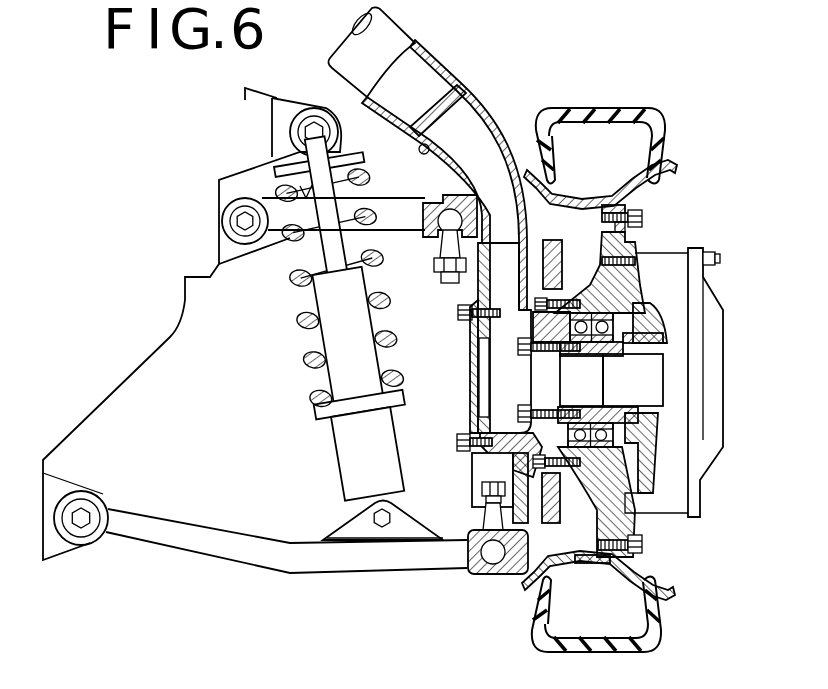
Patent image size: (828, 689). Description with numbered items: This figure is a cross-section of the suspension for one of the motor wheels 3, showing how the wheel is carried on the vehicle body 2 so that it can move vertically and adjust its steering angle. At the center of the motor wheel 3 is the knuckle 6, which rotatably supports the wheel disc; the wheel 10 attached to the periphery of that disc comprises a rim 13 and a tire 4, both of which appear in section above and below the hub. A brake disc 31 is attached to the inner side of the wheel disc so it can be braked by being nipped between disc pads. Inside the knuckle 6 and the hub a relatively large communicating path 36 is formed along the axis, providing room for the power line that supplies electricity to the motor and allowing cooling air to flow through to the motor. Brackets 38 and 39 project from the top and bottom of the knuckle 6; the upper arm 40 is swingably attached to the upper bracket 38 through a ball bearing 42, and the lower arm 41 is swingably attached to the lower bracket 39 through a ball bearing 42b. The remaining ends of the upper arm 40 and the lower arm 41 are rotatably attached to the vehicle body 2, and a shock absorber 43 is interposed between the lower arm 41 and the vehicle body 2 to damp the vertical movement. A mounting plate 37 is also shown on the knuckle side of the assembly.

The vehicle body 2 is at (168, 337).
The motor wheel 3 is at (668, 240).
The tire 4 is at (662, 114).
The knuckle 6 is at (483, 288).
The wheel 10 is at (645, 372).
The rim 13 is at (623, 378).
The brake disc 31 is at (552, 240).
The communicating path 36 is at (524, 397).
The mounting plate 37 is at (470, 380).
The bracket 38 is at (430, 262).
The bracket 39 is at (470, 517).
The upper arm 40 is at (395, 203).
The lower arm 41 is at (370, 562).
The ball bearing 42 is at (430, 236).
The ball bearing 42b is at (490, 556).
The shock absorber 43 is at (345, 463).